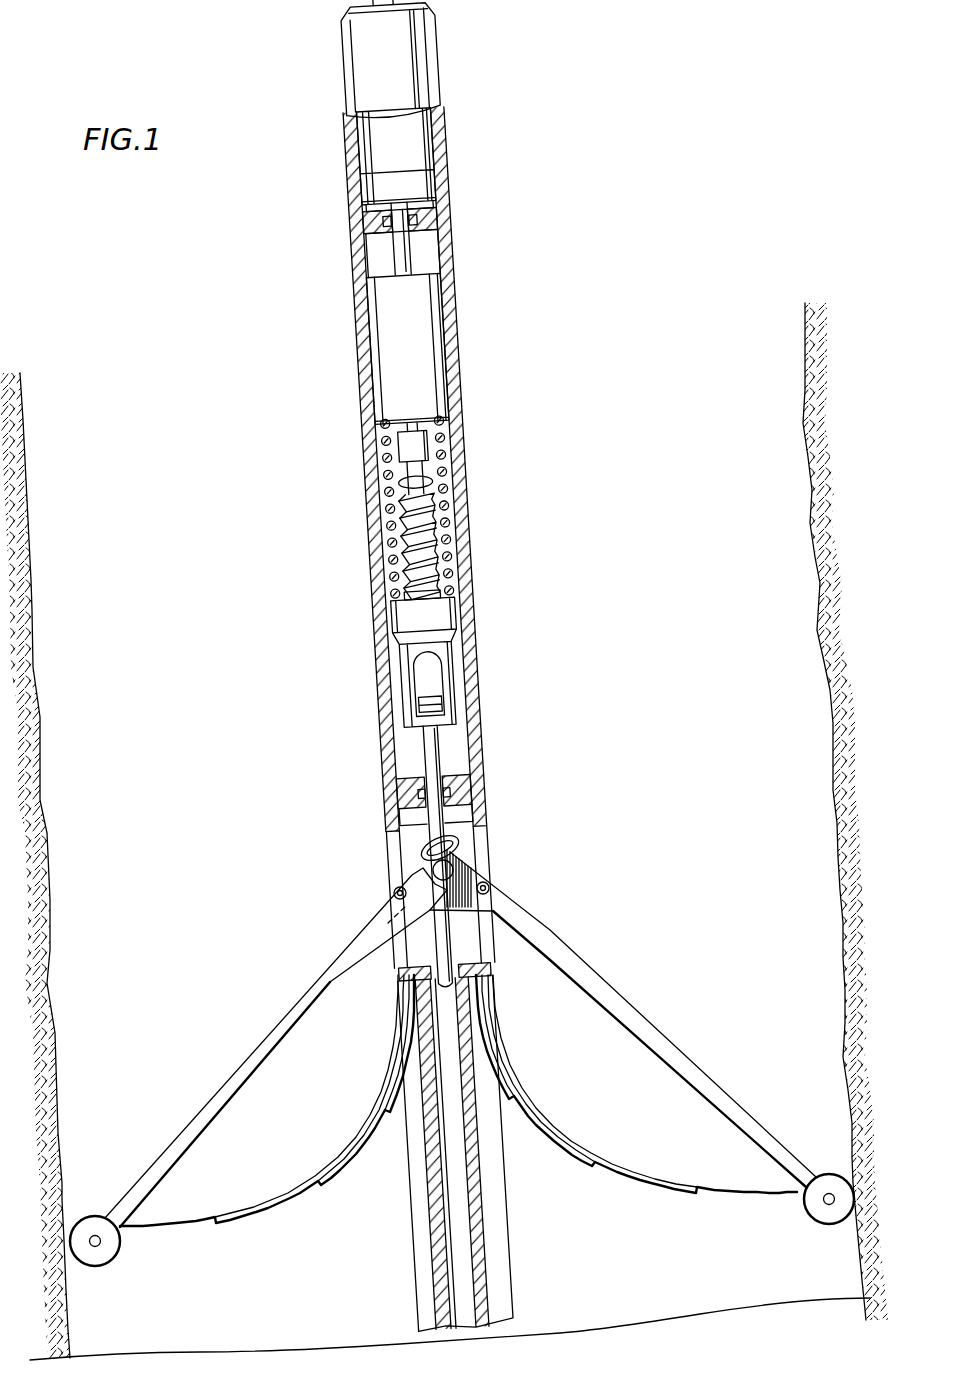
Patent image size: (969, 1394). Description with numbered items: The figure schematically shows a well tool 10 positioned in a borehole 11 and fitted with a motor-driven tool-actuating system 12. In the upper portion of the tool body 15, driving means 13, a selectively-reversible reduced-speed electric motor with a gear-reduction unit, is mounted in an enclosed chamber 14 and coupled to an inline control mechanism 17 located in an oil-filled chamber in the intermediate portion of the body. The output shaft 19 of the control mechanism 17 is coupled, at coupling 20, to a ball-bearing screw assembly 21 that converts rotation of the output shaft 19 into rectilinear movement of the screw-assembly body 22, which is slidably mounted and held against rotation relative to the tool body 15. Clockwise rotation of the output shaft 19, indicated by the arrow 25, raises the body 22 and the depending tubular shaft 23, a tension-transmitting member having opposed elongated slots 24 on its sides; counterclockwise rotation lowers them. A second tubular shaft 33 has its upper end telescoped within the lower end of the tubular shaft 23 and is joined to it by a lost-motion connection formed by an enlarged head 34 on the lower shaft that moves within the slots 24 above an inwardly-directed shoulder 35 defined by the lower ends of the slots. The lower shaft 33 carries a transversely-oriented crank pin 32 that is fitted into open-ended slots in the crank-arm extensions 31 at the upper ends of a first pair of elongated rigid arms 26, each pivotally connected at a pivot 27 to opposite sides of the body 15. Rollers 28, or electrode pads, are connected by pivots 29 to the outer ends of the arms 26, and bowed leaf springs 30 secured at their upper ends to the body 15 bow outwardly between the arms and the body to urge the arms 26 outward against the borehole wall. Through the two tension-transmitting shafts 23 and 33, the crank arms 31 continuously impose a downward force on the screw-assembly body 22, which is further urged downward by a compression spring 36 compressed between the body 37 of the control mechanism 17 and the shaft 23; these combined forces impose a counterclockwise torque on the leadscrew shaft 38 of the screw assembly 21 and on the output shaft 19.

The well tool 10 is at (502, 311).
The borehole 11 is at (40, 717).
The tool-actuating system 12 is at (330, 255).
The driving means 13 is at (424, 134).
The enclosed chamber 14 is at (441, 183).
The tool body 15 is at (455, 372).
The inline control mechanism 17 is at (389, 394).
The output shaft 19 is at (411, 428).
The coupling 20 is at (413, 453).
The ball-bearing screw assembly 21 is at (443, 537).
The screw-assembly body 22 is at (440, 599).
The tubular shaft 23 is at (449, 654).
The elongated slots 24 is at (438, 680).
The arrow 25 is at (432, 482).
The elongated rigid arms 26 is at (597, 985).
The pivotal connection 27 is at (490, 892).
The rollers 28 is at (815, 1221).
The pivots 29 is at (831, 1193).
The bowed leaf spring 30 is at (563, 1122).
The crank-arm extension 31 is at (455, 859).
The crank pin 32 is at (432, 863).
The tubular shaft 33 is at (438, 766).
The enlarged head 34 is at (439, 702).
The inwardly-directed shoulder 35 is at (418, 706).
The compression spring 36 is at (396, 509).
The control mechanism body 37 is at (395, 344).
The leadscrew shaft 38 is at (418, 548).